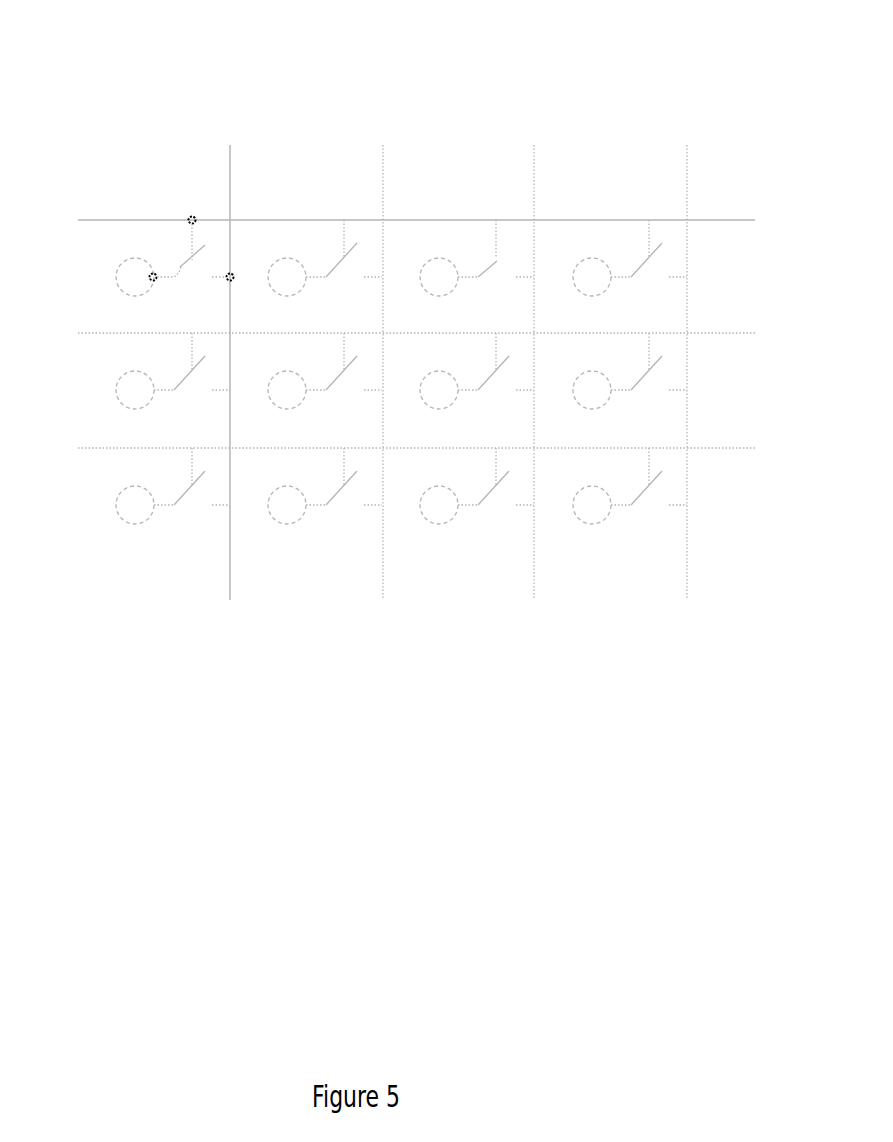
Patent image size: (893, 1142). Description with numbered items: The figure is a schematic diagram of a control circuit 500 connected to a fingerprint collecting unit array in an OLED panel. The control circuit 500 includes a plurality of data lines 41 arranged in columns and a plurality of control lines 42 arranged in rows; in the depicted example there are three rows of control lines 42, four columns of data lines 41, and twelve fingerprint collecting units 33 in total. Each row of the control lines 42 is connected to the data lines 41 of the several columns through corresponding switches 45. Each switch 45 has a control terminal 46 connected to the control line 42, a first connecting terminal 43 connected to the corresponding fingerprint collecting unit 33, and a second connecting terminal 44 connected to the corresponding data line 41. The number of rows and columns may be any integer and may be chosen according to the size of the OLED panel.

The control circuit 500 is at (389, 34).
The data line 41 is at (478, 370).
The control line 42 is at (401, 350).
The fingerprint collecting unit 33 is at (117, 276).
The first connecting terminal 43 is at (154, 273).
The second connecting terminal 44 is at (228, 282).
The switch 45 is at (180, 270).
The control terminal 46 is at (190, 216).